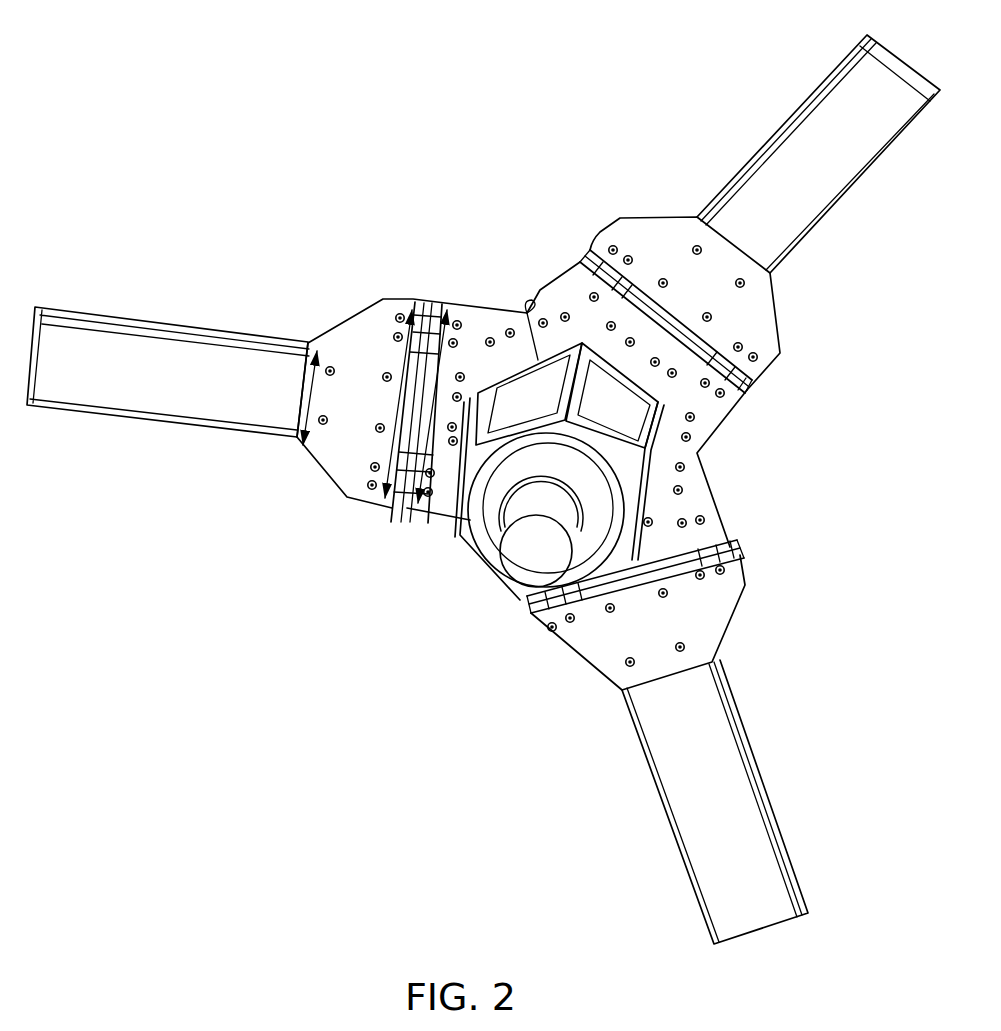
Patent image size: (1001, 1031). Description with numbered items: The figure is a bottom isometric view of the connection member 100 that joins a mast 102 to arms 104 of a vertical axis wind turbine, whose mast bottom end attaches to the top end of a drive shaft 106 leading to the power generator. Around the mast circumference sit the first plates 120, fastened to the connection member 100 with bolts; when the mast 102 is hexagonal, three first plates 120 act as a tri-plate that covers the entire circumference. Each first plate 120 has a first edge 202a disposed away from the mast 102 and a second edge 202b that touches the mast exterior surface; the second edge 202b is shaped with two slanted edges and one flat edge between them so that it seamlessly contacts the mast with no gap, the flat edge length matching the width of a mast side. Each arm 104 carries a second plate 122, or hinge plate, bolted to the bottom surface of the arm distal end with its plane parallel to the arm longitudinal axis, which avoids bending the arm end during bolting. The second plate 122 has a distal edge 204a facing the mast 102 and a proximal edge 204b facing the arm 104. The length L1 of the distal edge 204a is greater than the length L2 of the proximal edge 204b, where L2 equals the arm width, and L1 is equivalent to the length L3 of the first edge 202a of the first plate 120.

The connection member 100 is at (812, 340).
The mast 102 is at (623, 459).
The arm 104 is at (95, 358).
The drive shaft 106 is at (532, 557).
The first plate 120 is at (470, 350).
The second plate 122 is at (352, 343).
The first edge 202a is at (428, 398).
The second edge 202b is at (610, 360).
The distal edge 204a is at (425, 440).
The proximal edge 204b is at (300, 387).
The length of the distal edge L1 is at (402, 448).
The length of the proximal edge L2 is at (300, 400).
The length of the first edge L3 is at (455, 448).